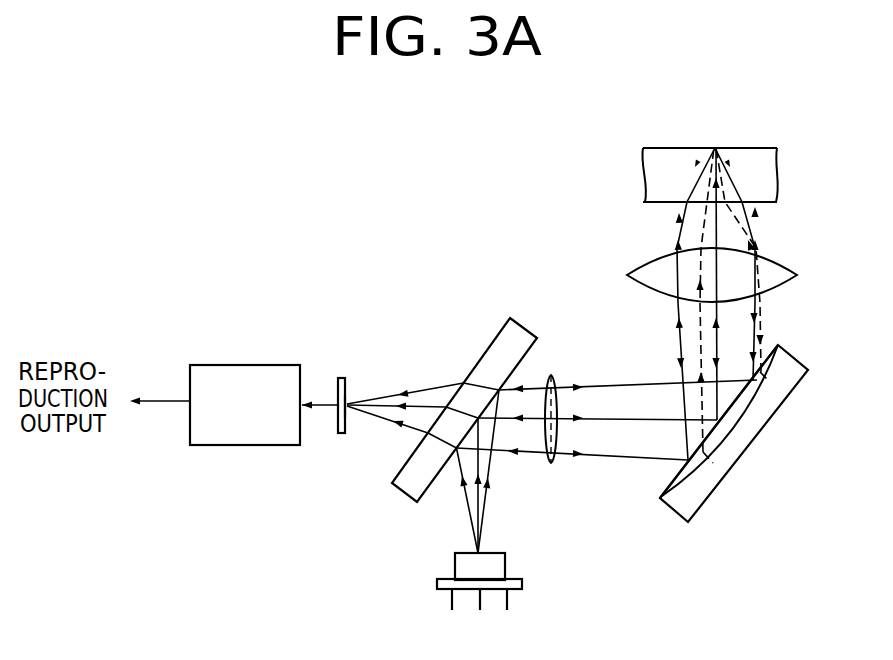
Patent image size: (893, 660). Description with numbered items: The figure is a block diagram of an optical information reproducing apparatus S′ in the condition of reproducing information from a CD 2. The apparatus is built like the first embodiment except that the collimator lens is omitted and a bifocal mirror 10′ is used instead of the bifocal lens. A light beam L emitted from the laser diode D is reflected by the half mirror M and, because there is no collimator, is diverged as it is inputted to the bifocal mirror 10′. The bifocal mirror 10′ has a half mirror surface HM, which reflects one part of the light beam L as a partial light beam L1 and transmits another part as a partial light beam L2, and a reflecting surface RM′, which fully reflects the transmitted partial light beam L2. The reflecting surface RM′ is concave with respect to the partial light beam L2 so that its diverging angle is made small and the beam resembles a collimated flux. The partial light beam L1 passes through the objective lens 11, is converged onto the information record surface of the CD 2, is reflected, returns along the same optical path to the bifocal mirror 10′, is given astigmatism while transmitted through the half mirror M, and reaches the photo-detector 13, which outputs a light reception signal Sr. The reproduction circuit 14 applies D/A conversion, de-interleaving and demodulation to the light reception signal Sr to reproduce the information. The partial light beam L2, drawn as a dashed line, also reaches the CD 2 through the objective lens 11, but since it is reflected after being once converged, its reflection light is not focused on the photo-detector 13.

The CD 2 is at (777, 182).
The objective lens 11 is at (795, 266).
The bifocal mirror 10′ is at (783, 405).
The reflecting surface RM′ is at (701, 473).
The half mirror surface HM is at (670, 481).
The partial light beam L1 is at (675, 307).
The partial light beam L2 is at (700, 340).
The half mirror M is at (484, 355).
The light beam L is at (550, 463).
The laser diode D is at (438, 583).
The photo-detector 13 is at (343, 378).
The light reception signal Sr is at (327, 409).
The reproduction circuit 14 is at (262, 365).
The optical information reproducing apparatus S′ is at (358, 205).